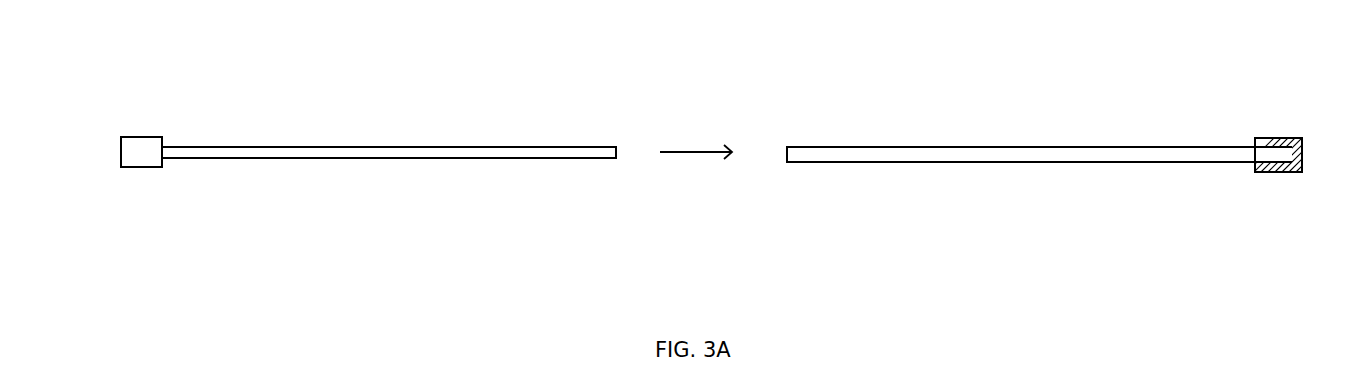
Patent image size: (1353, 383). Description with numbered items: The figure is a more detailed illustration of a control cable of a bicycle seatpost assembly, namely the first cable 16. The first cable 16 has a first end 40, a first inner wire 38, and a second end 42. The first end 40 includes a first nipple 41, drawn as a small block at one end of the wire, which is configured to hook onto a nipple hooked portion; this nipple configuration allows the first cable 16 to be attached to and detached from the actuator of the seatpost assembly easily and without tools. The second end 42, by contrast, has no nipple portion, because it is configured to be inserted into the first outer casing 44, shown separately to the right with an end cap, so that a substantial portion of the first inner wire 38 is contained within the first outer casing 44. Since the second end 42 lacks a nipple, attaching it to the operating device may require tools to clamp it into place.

The first cable 16 is at (122, 107).
The first nipple 41 is at (137, 180).
The first end 40 is at (181, 180).
The first inner wire 38 is at (380, 170).
The second end 42 is at (608, 180).
The first outer casing 44 is at (1045, 170).